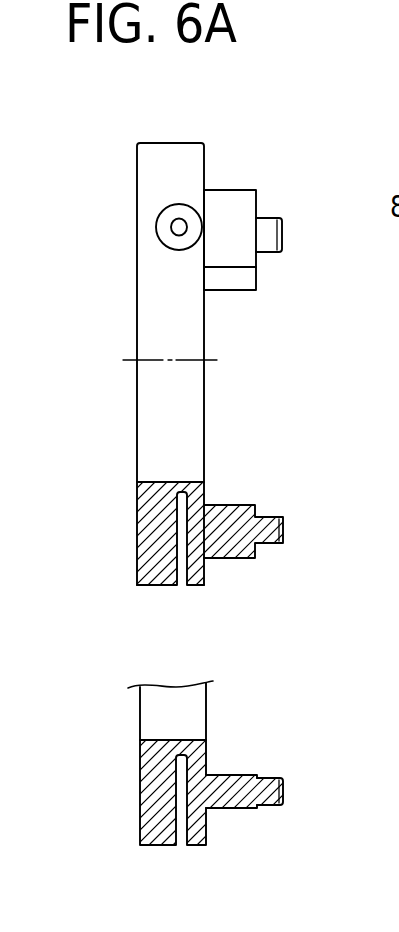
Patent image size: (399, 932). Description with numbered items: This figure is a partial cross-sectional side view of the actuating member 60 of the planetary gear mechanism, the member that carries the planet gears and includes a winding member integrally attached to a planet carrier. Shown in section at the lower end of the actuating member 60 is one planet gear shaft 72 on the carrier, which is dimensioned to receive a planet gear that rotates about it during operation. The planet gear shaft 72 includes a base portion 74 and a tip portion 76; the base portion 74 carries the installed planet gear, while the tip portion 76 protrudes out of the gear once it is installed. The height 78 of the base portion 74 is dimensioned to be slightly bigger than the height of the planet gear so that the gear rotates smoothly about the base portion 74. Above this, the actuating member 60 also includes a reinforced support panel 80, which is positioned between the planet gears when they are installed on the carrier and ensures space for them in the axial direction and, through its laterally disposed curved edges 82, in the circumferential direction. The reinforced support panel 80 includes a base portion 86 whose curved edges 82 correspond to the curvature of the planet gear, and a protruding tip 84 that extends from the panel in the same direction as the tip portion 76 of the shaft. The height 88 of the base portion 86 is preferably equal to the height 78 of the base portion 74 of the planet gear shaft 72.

The actuating member 60 is at (147, 323).
The planet gear shaft 72 is at (263, 763).
The base portion 74 is at (225, 788).
The tip portion 76 is at (283, 787).
The height 78 is at (206, 817).
The reinforced support panel 80 is at (294, 333).
The curved edges 82 is at (398, 279).
The protruding tip 84 is at (283, 228).
The base portion 86 is at (233, 280).
The height 88 is at (206, 560).